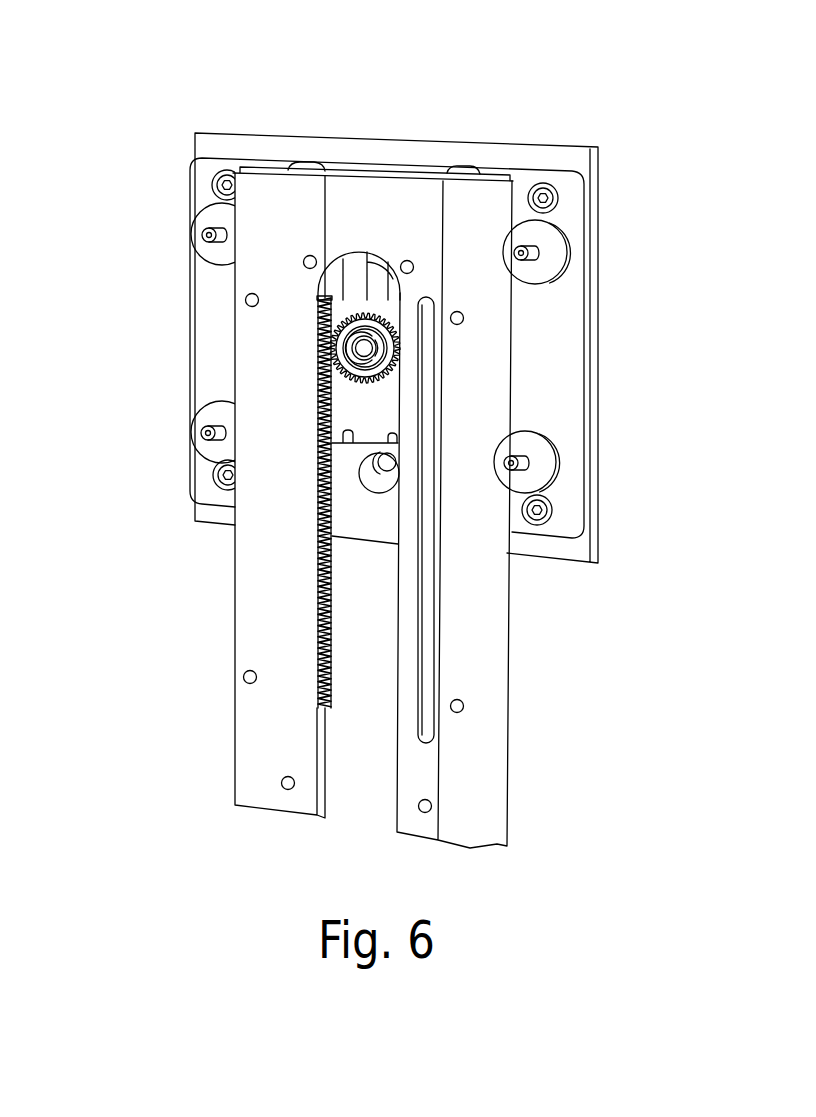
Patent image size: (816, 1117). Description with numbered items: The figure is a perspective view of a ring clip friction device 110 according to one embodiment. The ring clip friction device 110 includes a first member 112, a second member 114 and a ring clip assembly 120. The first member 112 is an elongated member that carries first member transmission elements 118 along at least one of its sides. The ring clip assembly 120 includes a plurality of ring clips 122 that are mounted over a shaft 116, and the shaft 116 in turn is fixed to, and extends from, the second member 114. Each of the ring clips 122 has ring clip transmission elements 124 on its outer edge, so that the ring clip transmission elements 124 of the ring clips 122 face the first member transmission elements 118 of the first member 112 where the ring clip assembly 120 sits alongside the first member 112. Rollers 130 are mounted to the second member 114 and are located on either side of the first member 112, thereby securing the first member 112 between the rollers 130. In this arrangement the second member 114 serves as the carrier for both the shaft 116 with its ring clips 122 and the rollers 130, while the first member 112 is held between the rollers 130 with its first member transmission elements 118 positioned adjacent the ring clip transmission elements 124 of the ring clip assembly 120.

The ring clip friction device 110 is at (150, 105).
The first member 112 is at (273, 647).
The second member 114 is at (412, 148).
The shaft 116 is at (368, 348).
The first member transmission elements 118 is at (337, 662).
The ring clip assembly 120 is at (310, 294).
The ring clips 122 is at (360, 312).
The ring clip transmission elements 124 is at (392, 398).
The rollers 130 is at (205, 214).